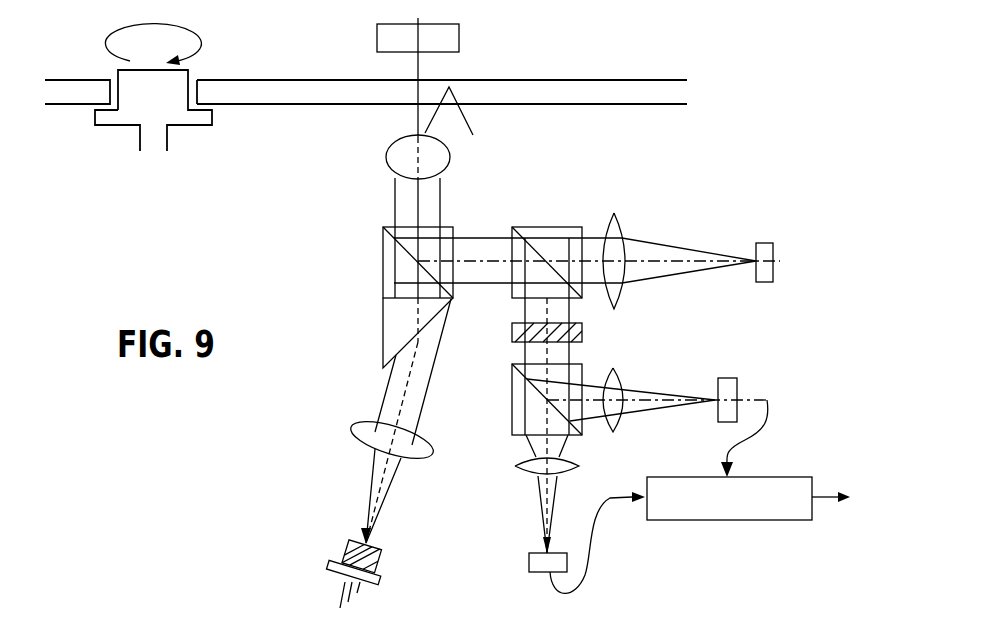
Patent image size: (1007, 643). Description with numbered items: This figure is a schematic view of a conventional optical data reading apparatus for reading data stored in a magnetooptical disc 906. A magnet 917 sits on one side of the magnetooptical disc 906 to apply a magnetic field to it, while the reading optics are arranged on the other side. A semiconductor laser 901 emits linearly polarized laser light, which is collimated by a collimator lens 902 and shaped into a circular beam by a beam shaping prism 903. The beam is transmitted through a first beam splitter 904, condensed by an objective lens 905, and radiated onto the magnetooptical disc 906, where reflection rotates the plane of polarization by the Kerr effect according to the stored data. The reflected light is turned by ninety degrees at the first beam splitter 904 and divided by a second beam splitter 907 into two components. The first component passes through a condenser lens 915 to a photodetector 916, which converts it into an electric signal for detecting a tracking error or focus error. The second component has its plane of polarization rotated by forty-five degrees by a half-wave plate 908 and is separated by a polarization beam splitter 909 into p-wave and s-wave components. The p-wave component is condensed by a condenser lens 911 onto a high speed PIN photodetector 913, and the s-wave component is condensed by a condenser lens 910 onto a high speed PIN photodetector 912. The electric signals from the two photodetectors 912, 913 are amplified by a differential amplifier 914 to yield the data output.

The semiconductor laser 901 is at (336, 563).
The collimator lens 902 is at (353, 437).
The beam shaping prism 903 is at (383, 331).
The first beam splitter 904 is at (383, 262).
The objective lens 905 is at (388, 147).
The magnetooptical disc 906 is at (608, 78).
The second beam splitter 907 is at (537, 226).
The λ/2 plate 908 is at (582, 332).
The polarization beam splitter 909 is at (512, 396).
The condenser lens 910 is at (617, 378).
The condenser lens 911 is at (580, 461).
The high speed PIN photodetector 912 is at (737, 383).
The high speed PIN photodetector 913 is at (528, 565).
The differential amplifier 914 is at (720, 520).
The condenser lens 915 is at (622, 217).
The photodetector 916 is at (773, 250).
The magnet 917 is at (459, 36).